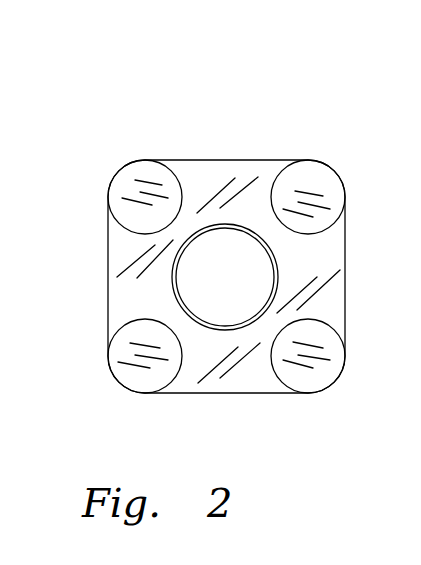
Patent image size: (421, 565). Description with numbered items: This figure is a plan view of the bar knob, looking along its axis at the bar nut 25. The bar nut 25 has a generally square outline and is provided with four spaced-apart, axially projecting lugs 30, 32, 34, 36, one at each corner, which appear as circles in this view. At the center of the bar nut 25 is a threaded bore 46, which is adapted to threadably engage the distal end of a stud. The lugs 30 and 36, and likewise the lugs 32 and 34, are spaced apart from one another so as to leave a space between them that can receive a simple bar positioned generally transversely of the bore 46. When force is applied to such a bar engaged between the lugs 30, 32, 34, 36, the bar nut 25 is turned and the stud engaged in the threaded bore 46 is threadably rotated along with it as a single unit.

The bar nut 25 is at (137, 107).
The lug 30 is at (318, 175).
The lug 32 is at (130, 212).
The lug 34 is at (133, 370).
The lug 36 is at (293, 375).
The threaded bore 46 is at (250, 232).